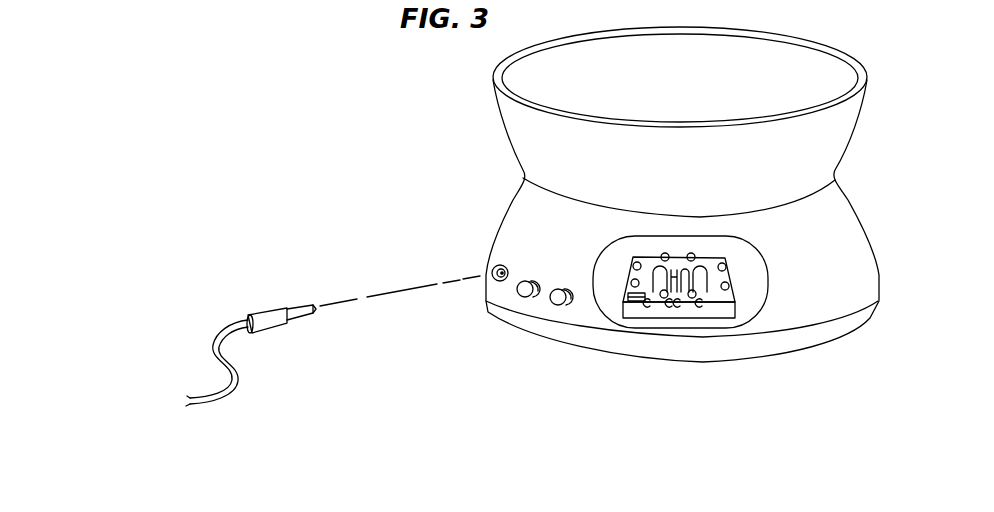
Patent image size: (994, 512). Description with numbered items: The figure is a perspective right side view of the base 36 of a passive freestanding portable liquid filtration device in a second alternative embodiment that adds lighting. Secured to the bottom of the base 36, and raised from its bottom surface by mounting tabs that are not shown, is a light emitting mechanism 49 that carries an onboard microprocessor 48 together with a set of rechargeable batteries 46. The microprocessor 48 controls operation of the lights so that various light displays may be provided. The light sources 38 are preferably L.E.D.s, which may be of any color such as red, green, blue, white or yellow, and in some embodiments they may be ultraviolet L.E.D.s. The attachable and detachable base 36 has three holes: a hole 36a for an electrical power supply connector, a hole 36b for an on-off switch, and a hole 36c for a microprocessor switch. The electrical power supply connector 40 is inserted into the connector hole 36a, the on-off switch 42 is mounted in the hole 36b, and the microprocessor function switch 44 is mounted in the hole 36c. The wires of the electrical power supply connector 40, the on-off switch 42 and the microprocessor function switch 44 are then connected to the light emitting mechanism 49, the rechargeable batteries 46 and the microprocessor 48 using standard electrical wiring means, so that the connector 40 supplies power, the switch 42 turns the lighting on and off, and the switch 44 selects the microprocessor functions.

The base 36 is at (480, 118).
The hole of an electrical power supply connector 36a is at (492, 270).
The hole for an on-off switch 36b is at (536, 279).
The hole for a microprocessor switch 36c is at (572, 287).
The light sources 38 is at (631, 280).
The electrical power supply connector 40 is at (268, 316).
The on-off switch 42 is at (520, 294).
The microprocessor function switch 44 is at (558, 305).
The rechargeable batteries 46 is at (724, 265).
The microprocessor 48 is at (633, 302).
The light emitting mechanism 49 is at (737, 312).